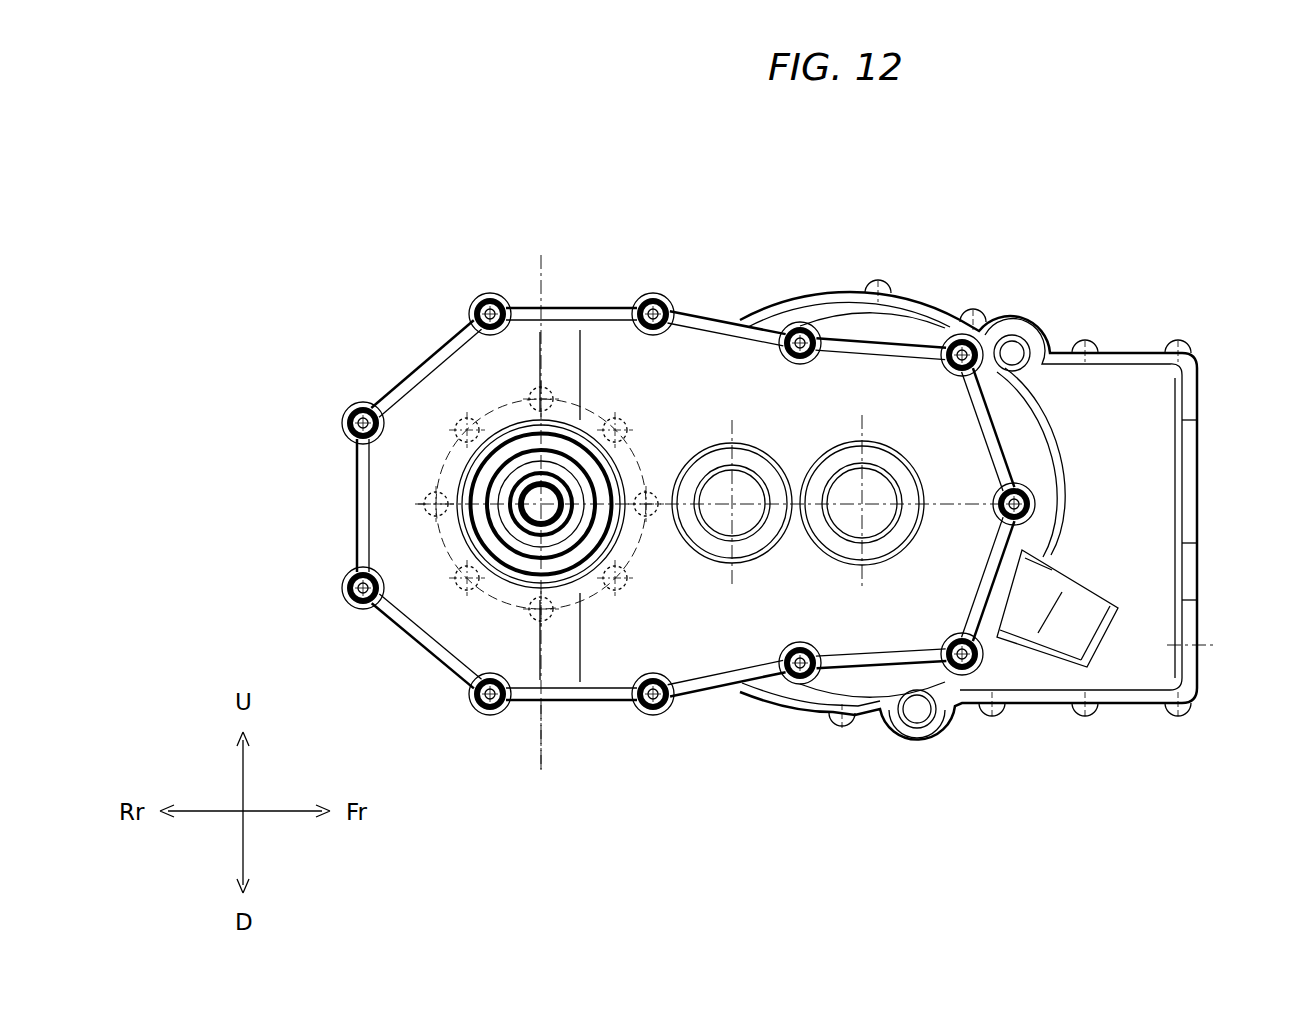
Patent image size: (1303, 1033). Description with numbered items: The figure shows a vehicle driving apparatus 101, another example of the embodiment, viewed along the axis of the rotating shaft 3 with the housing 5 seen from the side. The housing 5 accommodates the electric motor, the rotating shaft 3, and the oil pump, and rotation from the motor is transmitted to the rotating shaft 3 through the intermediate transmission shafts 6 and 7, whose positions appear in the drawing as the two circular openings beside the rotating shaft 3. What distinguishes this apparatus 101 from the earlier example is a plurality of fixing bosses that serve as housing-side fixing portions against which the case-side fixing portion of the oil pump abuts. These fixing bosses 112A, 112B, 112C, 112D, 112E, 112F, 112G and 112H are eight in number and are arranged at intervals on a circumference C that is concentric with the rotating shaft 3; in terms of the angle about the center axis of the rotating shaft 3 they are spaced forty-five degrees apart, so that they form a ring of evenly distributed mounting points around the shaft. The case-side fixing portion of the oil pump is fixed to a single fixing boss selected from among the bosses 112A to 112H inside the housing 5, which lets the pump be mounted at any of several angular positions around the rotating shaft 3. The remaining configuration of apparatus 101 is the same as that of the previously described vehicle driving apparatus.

The vehicle driving apparatus 101 is at (387, 175).
The fixing boss 112A is at (538, 387).
The fixing boss 112B is at (610, 414).
The fixing boss 112C is at (650, 490).
The fixing boss 112D is at (627, 594).
The fixing boss 112E is at (540, 624).
The fixing boss 112F is at (452, 593).
The fixing boss 112G is at (425, 515).
The fixing boss 112H is at (455, 412).
The rotating shaft 3 is at (537, 512).
The housing 5 is at (1118, 392).
The intermediate transmission shaft 6 is at (848, 522).
The intermediate transmission shaft 7 is at (727, 522).
The circumference C is at (578, 700).